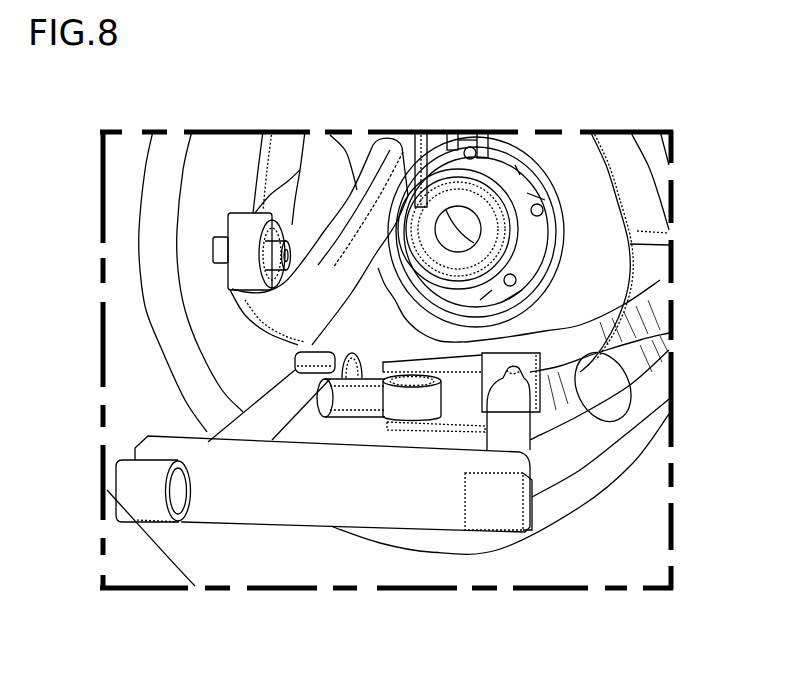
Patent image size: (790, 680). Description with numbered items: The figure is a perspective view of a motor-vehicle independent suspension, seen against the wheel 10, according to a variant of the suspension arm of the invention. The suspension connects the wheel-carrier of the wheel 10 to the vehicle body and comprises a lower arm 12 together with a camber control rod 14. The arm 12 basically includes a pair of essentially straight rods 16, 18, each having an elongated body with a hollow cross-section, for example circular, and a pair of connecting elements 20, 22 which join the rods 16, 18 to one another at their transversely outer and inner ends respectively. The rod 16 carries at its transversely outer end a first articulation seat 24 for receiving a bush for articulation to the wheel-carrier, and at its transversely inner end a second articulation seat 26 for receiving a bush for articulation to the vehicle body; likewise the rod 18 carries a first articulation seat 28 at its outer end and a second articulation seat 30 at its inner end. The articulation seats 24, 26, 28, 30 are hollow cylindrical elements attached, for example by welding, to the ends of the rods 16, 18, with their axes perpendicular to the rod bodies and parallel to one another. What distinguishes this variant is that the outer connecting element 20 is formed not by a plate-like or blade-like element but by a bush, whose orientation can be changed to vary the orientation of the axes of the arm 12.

The wheel 10 is at (622, 531).
The lower arm 12 is at (393, 563).
The camber control rod 14 is at (358, 190).
The rod 16 is at (517, 428).
The rod 18 is at (263, 407).
The outer connecting element 20 is at (660, 280).
The inner connecting element 22 is at (293, 510).
The first articulation seat 24 is at (545, 338).
The second articulation seat 26 is at (492, 522).
The first articulation seat 28 is at (330, 352).
The second articulation seat 30 is at (155, 510).